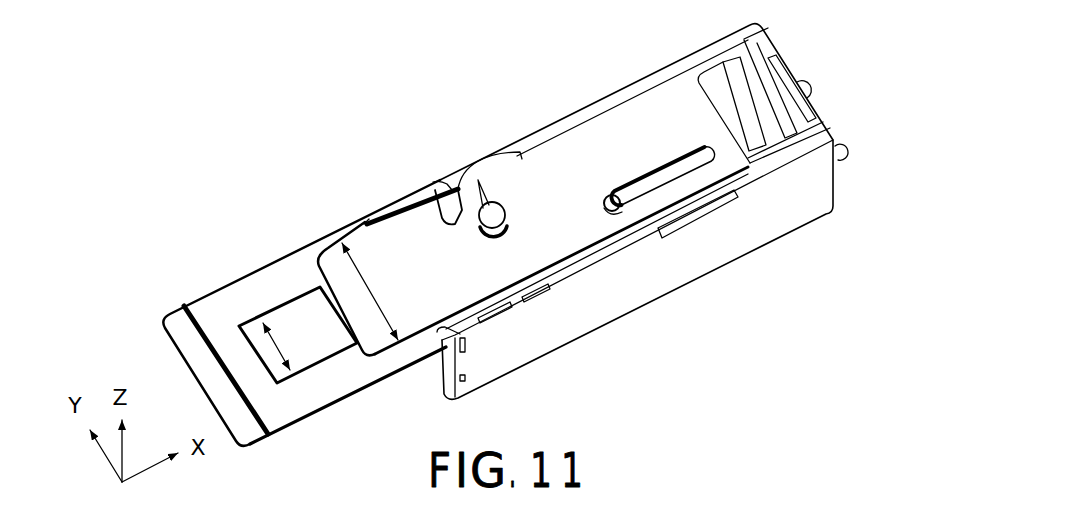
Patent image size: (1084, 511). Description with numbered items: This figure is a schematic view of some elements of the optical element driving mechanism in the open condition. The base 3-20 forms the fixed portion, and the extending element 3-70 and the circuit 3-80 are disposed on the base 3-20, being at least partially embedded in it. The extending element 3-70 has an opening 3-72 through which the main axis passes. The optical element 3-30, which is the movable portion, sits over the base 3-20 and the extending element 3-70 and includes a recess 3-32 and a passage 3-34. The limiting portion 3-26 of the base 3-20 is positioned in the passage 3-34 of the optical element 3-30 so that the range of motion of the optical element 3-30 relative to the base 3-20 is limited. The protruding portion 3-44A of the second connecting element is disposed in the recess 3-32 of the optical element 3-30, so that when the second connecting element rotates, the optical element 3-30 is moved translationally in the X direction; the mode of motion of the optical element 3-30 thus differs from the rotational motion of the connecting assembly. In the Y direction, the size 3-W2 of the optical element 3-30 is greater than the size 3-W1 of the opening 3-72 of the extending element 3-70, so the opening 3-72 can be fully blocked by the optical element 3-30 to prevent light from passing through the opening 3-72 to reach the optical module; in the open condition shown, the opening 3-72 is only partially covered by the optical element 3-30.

The base 3-20 is at (783, 216).
The limiting portion 3-26 is at (616, 211).
The optical element 3-30 is at (572, 165).
The recess 3-32 is at (436, 190).
The passage 3-34 is at (648, 172).
The protruding portion 3-44A is at (490, 212).
The extending element 3-70 is at (220, 307).
The opening 3-72 is at (300, 317).
The circuit 3-80 is at (845, 148).
The size of the opening 3-W1 is at (304, 346).
The size of the optical element 3-W2 is at (392, 291).